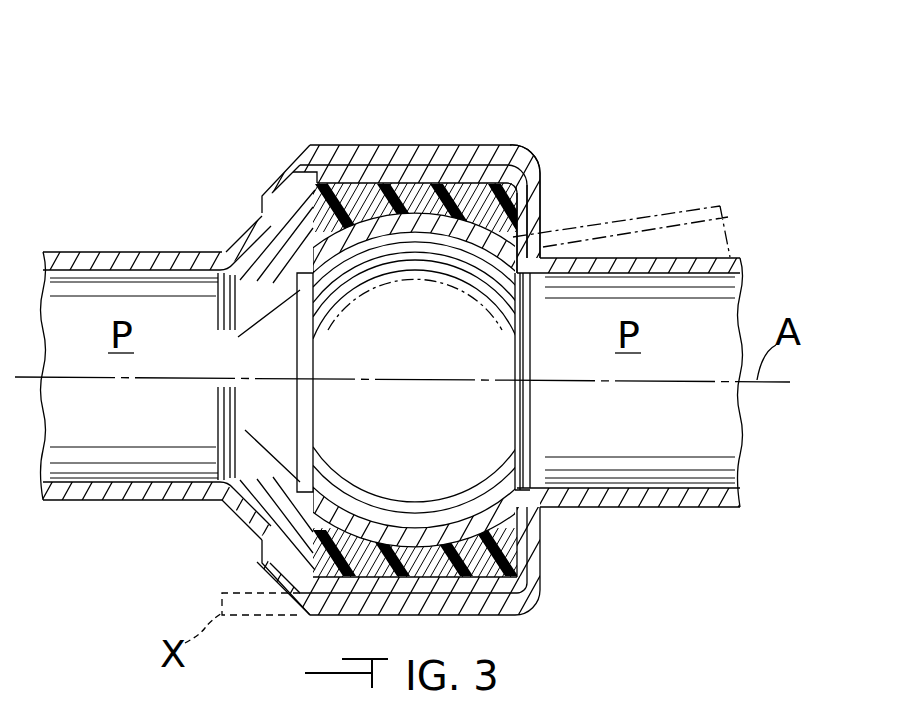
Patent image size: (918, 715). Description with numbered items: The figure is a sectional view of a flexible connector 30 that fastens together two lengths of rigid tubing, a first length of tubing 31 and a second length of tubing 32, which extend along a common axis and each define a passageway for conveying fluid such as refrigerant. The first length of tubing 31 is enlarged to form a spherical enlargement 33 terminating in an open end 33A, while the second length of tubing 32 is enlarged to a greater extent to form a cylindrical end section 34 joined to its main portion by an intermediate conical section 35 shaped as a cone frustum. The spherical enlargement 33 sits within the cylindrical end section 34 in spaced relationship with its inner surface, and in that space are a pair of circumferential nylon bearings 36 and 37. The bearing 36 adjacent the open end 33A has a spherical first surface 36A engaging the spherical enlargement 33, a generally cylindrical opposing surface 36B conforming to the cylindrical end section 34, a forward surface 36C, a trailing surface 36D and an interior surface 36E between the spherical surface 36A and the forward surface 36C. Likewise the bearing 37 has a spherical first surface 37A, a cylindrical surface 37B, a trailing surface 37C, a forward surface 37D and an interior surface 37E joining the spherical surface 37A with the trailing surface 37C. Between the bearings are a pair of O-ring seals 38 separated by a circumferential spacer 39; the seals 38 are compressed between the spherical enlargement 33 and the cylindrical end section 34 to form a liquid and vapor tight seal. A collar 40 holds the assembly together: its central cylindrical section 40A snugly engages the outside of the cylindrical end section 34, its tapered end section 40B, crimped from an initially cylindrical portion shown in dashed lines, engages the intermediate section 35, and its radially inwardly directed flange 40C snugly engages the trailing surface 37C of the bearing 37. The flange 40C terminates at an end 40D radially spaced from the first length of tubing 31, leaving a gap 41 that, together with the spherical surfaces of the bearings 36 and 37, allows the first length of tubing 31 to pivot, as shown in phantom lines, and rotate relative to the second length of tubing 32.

The flexible connector 30 is at (507, 145).
The first length of tubing 31 is at (743, 258).
The second length of tubing 32 is at (58, 251).
The spherical enlargement 33 is at (377, 223).
The open end 33A is at (300, 412).
The cylindrical end section 34 is at (363, 175).
The intermediate conical section 35 is at (243, 237).
The bearing 36 is at (288, 167).
The first surface of bearing 36 36A is at (300, 262).
The opposing surface of bearing 36 36B is at (347, 175).
The forward surface of bearing 36 36C is at (260, 190).
The trailing surface of bearing 36 36D is at (373, 232).
The interior surface of bearing 36 36E is at (320, 268).
The bearing 37 is at (538, 200).
The first surface of bearing 37 37A is at (478, 222).
The cylindrical surface of bearing 37 37B is at (542, 166).
The trailing surface of bearing 37 37C is at (540, 235).
The forward surface of bearing 37 37D is at (512, 152).
The interior surface of bearing 37 37E is at (500, 262).
The O-ring seals 38 is at (390, 177).
The circumferential spacer 39 is at (417, 177).
The collar 40 is at (480, 618).
The central cylindrical section 40A is at (323, 617).
The tapered end section 40B is at (285, 598).
The radially inwardly directed flange 40C is at (538, 573).
The end of flange 40D is at (538, 540).
The gap 41 is at (537, 520).